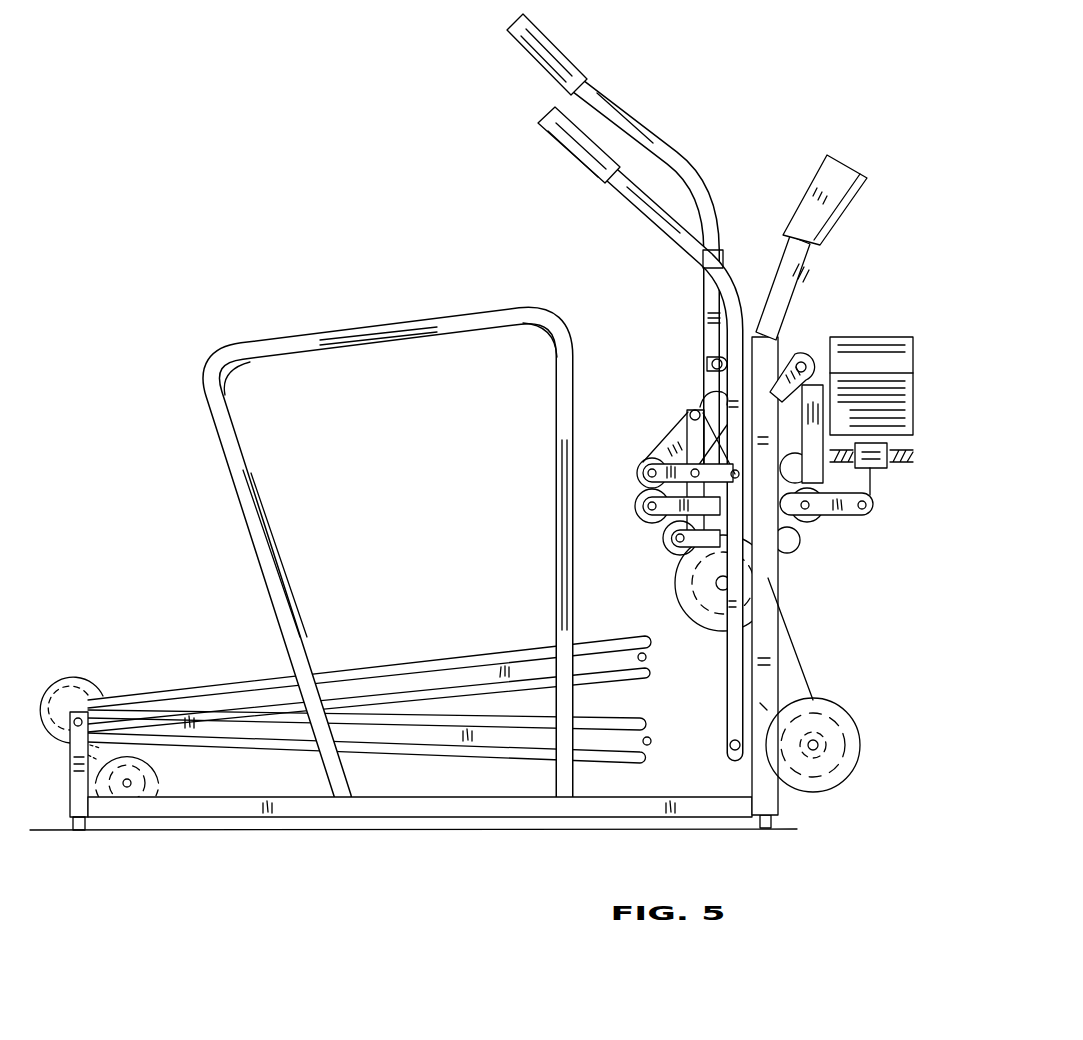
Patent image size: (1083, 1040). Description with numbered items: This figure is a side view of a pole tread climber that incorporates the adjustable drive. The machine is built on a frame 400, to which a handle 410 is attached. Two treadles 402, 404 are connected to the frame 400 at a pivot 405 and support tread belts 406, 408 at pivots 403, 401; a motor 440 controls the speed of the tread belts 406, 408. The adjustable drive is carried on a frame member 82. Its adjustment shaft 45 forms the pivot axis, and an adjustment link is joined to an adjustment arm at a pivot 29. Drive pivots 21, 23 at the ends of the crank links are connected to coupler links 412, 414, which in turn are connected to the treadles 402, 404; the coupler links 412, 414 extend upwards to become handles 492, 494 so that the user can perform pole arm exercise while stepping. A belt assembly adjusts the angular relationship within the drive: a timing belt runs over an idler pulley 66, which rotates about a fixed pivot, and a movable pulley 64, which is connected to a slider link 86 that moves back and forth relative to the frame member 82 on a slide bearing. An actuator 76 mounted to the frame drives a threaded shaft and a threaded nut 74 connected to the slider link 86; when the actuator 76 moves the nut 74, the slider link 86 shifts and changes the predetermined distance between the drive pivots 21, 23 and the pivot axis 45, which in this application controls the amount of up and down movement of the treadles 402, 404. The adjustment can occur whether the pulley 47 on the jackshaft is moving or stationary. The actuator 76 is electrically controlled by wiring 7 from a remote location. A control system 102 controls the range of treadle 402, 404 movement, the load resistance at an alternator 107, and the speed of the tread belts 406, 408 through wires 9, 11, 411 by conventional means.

The handle 494 is at (557, 43).
The handle 492 is at (555, 143).
The control system 102 is at (820, 163).
The wire 9 is at (825, 262).
The handle 410 is at (402, 325).
The coupler link 414 is at (702, 278).
The wiring 7 is at (815, 345).
The actuator 76 is at (900, 338).
The drive pivot 23 is at (708, 362).
The adjustment shaft 45 is at (703, 397).
The pivot 29 is at (693, 412).
The drive pivot 21 is at (690, 445).
The movable pulley 64 is at (640, 502).
The idler pulley 66 is at (663, 538).
The threaded nut 74 is at (868, 478).
The slider link 86 is at (837, 517).
The coupler link 412 is at (720, 602).
The pulley 47 is at (768, 603).
The pivot 401 is at (640, 652).
The pivot 405 is at (77, 707).
The frame member 82 is at (778, 660).
The treadle 404 is at (443, 682).
The tread belt 408 is at (505, 648).
The motor 440 is at (142, 748).
The alternator 107 is at (812, 713).
The tread belt 406 is at (583, 718).
The pivot 403 is at (652, 735).
The wire 411 is at (171, 776).
The frame 400 is at (455, 797).
The treadle 402 is at (528, 745).
The wire 11 is at (837, 787).